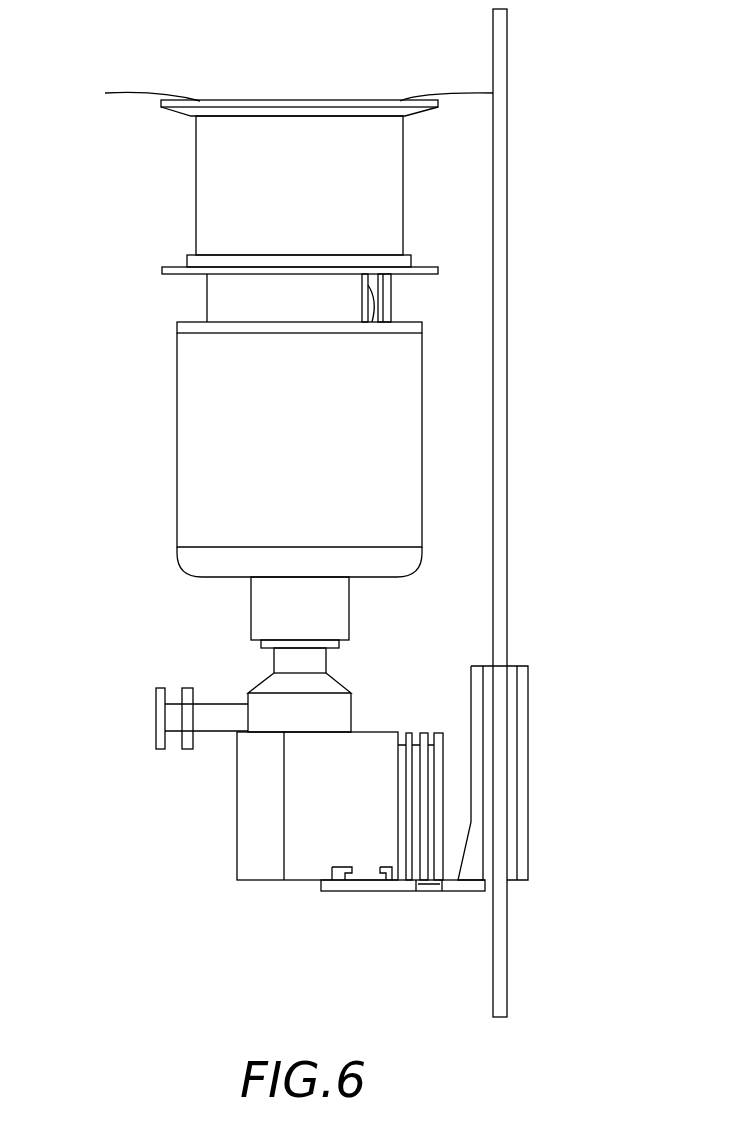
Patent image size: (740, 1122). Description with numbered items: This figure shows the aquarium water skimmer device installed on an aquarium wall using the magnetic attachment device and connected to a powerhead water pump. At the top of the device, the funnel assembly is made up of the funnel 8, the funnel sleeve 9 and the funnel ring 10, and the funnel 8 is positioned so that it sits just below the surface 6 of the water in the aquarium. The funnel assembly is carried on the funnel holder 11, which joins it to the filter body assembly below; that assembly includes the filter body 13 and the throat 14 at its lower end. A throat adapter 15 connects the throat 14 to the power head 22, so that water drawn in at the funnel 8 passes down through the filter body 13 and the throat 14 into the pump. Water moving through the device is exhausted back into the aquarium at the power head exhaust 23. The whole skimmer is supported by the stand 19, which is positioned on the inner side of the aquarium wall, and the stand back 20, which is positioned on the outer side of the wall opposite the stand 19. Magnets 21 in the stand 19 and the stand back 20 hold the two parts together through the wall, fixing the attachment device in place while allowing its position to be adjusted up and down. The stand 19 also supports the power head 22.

The surface of the water 6 is at (165, 80).
The funnel 8 is at (165, 118).
The funnel sleeve 9 is at (313, 213).
The funnel ring 10 is at (300, 265).
The funnel holder 11 is at (290, 310).
The filter body 13 is at (228, 438).
The throat 14 is at (297, 617).
The throat adapter 15 is at (250, 644).
The stand 19 is at (357, 900).
The stand back 20 is at (540, 762).
The magnets 21 is at (513, 590).
The power head 22 is at (310, 836).
The power head exhaust 23 is at (150, 720).